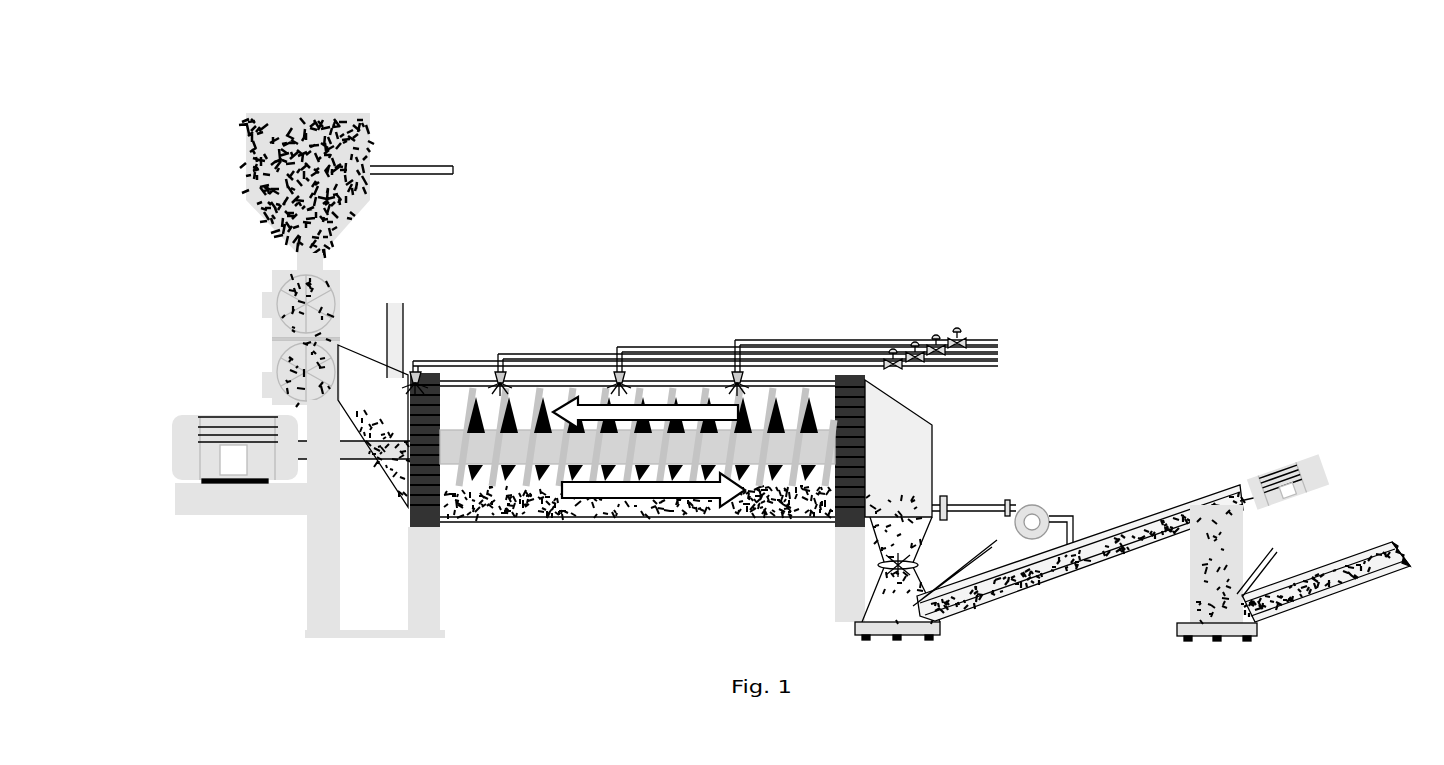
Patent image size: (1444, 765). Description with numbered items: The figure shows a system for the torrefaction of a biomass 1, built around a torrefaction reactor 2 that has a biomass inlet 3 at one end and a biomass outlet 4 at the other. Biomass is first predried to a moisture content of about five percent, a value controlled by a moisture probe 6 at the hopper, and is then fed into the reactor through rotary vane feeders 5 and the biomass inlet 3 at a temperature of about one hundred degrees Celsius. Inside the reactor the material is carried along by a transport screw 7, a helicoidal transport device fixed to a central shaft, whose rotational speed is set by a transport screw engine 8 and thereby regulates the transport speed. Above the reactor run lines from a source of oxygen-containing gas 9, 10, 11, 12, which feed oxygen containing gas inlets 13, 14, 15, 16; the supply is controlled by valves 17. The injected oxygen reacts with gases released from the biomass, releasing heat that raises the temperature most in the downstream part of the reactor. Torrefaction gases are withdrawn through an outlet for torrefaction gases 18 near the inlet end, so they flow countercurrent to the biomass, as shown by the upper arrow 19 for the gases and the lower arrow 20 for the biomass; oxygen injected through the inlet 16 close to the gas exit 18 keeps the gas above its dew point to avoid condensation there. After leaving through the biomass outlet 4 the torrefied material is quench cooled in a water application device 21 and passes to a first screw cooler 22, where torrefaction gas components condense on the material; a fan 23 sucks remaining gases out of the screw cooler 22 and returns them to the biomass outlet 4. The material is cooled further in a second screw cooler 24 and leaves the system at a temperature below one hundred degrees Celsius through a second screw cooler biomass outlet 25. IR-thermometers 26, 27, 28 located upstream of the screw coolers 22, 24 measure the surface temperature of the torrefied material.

The system for the torrefaction of a biomass 1 is at (640, 228).
The torrefaction reactor 2 is at (588, 522).
The biomass inlet 3 is at (378, 463).
The biomass outlet 4 is at (873, 530).
The rotary vane feeders 5 is at (272, 373).
The moisture probe 6 is at (453, 170).
The transport screw 7 is at (541, 430).
The transport screw engine 8 is at (213, 466).
The source of oxygen-containing gas 9 is at (998, 364).
The source of oxygen-containing gas 10 is at (998, 357).
The source of oxygen-containing gas 11 is at (998, 350).
The source of oxygen-containing gas 12 is at (998, 342).
The oxygen containing gas inlet 13 is at (737, 372).
The oxygen containing gas inlet 14 is at (619, 372).
The oxygen containing gas inlet 15 is at (500, 372).
The oxygen containing gas inlet 16 is at (414, 370).
The valves 17 is at (957, 328).
The outlet for torrefaction gases 18 is at (395, 303).
The upper arrow 19 is at (660, 404).
The lower arrow 20 is at (637, 500).
The water application device 21 is at (918, 566).
The first screw cooler 22 is at (1033, 591).
The fan 23 is at (1052, 510).
The second screw cooler 24 is at (1347, 582).
The second screw cooler biomass outlet 25 is at (1401, 546).
The IR-thermometer 26 is at (932, 470).
The IR-thermometer 27 is at (962, 562).
The IR-thermometer 28 is at (1273, 548).